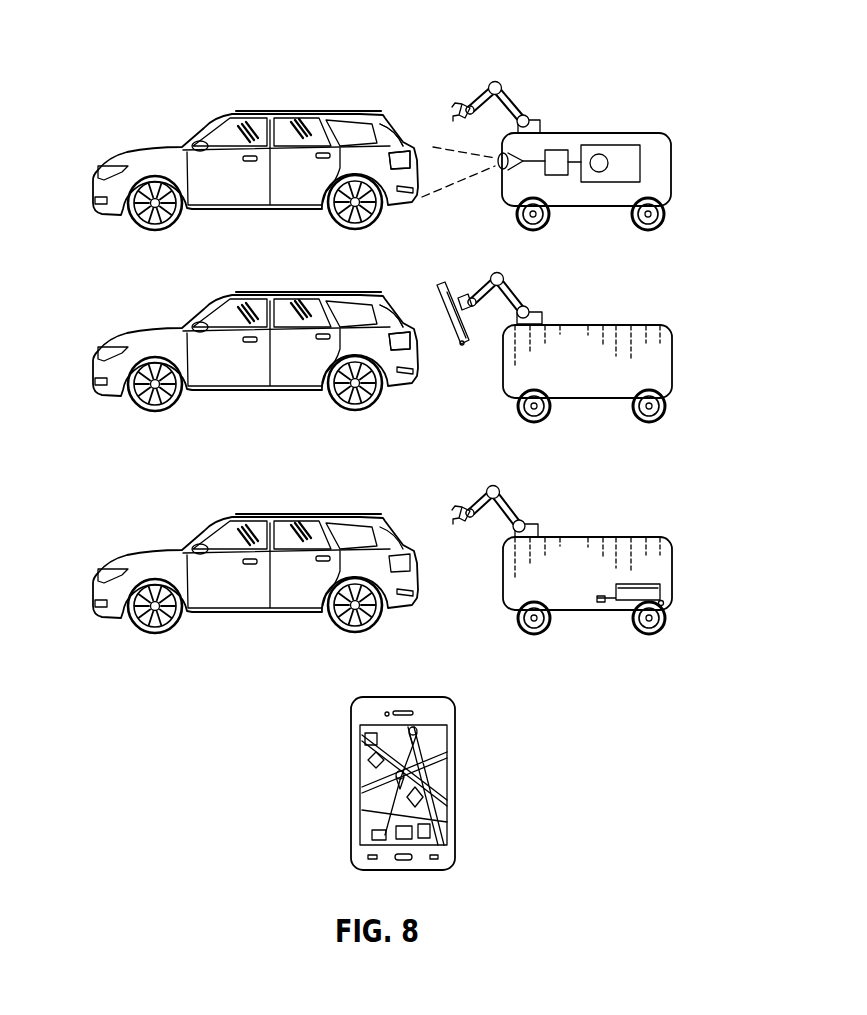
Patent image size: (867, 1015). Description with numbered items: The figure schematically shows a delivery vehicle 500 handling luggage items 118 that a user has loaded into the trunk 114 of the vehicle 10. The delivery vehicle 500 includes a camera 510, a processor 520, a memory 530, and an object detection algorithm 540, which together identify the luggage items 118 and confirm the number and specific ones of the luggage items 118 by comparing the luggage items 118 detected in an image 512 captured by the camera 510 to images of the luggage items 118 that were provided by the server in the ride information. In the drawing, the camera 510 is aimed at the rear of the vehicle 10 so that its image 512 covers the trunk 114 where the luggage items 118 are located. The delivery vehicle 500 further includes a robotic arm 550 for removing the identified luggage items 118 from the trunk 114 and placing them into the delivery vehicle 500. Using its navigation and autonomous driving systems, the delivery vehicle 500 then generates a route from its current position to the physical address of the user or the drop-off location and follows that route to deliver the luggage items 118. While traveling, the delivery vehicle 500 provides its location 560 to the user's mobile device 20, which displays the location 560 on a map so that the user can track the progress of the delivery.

The vehicle 10 is at (125, 118).
The trunk 114 is at (407, 127).
The luggage items 118 is at (446, 304).
The delivery vehicle 500 is at (686, 141).
The camera 510 is at (506, 172).
The image 512 is at (433, 146).
The processor 520 is at (553, 150).
The memory 530 is at (640, 163).
The object detection algorithm 540 is at (600, 154).
The robotic arm 550 is at (496, 82).
The location 560 is at (394, 776).
The mobile device 20 is at (418, 783).